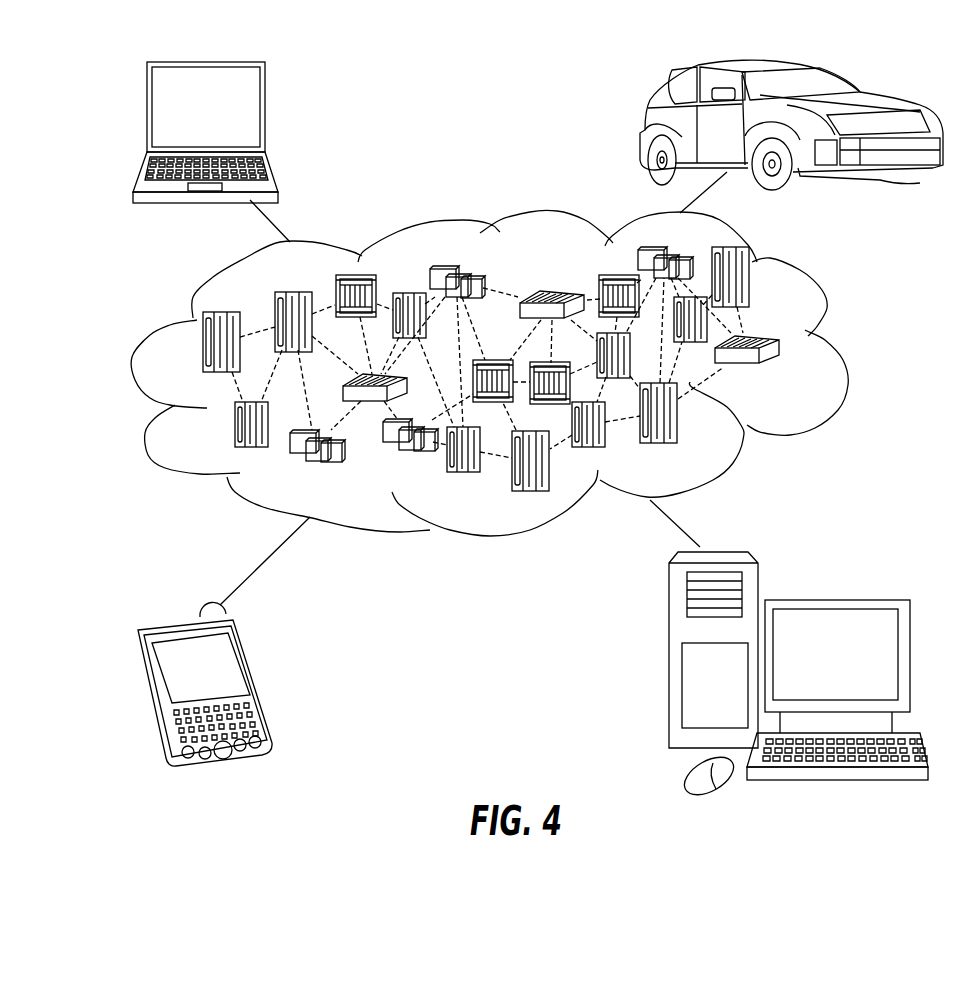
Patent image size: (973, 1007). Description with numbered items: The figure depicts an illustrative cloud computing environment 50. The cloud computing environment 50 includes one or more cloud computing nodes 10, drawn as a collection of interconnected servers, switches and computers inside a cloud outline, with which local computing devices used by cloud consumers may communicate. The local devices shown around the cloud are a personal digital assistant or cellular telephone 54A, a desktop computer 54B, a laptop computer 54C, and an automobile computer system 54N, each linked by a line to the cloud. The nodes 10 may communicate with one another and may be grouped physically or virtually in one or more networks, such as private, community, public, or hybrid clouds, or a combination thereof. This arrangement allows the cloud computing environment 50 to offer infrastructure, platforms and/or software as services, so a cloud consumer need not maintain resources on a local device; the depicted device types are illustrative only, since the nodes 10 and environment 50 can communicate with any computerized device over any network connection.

The cloud computing node 10 is at (787, 377).
The cloud computing environment 50 is at (508, 373).
The personal digital assistant or cellular telephone 54A is at (255, 680).
The desktop computer 54B is at (833, 600).
The laptop computer 54C is at (267, 112).
The automobile computer system 54N is at (642, 128).